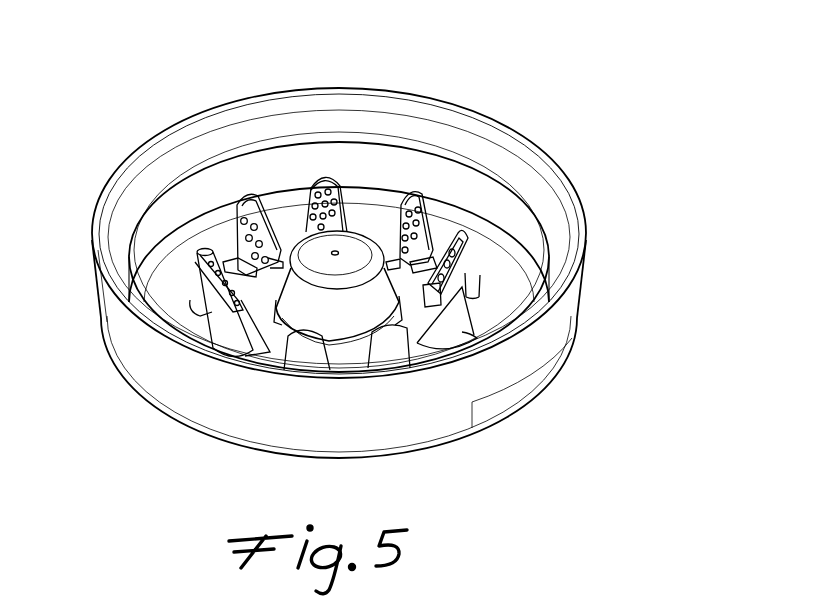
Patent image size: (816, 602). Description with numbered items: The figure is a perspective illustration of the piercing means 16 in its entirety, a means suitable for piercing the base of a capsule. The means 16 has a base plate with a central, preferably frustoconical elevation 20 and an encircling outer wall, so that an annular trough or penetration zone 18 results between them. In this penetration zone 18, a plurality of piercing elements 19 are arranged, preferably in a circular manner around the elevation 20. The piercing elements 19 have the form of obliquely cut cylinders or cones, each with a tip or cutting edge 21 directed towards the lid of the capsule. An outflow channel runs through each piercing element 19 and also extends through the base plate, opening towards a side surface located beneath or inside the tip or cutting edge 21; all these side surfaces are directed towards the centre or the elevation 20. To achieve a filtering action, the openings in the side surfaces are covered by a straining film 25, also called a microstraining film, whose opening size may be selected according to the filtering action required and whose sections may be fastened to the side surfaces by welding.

The means for piercing 16 is at (588, 319).
The annular trough or penetration zone 18 is at (505, 290).
The piercing element 19 is at (195, 286).
The frustoconical elevation 20 is at (354, 246).
The tip or cutting edge 21 is at (240, 200).
The straining film 25 is at (320, 178).